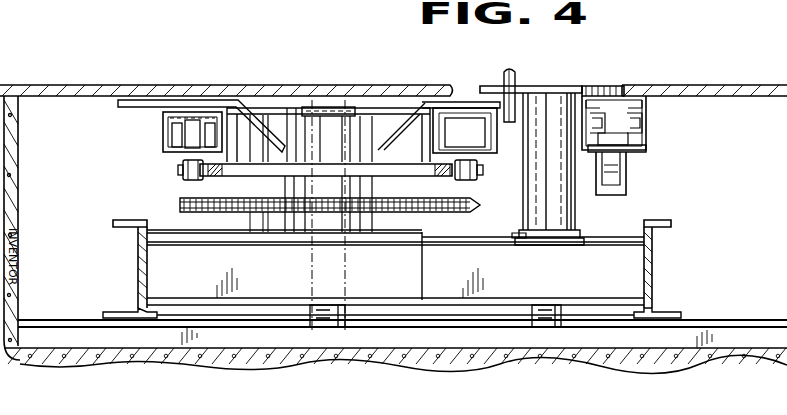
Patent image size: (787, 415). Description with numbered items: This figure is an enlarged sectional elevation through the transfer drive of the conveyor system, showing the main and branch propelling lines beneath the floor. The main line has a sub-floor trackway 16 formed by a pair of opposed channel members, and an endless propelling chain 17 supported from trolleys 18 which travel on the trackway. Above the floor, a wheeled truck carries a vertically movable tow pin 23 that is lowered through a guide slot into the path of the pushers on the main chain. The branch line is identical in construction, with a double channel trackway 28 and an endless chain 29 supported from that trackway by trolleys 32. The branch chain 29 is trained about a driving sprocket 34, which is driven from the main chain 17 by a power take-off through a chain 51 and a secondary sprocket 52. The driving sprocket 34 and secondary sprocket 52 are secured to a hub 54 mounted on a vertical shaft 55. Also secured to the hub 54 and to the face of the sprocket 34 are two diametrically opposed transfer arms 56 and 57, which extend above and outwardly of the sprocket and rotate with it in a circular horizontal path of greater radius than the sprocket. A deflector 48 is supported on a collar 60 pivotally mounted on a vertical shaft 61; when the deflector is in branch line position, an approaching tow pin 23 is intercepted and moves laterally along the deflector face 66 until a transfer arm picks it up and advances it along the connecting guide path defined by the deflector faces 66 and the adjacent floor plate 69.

The sub-floor trackway 16 is at (654, 152).
The endless propelling chain 17 is at (611, 175).
The trolleys 18 is at (643, 129).
The tow pin 23 is at (524, 84).
The double channel trackway 28 is at (164, 140).
The endless chain 29 is at (184, 177).
The trolleys 32 is at (193, 122).
The driving sprocket 34 is at (390, 172).
The deflector 48 is at (631, 130).
The chain 51 is at (181, 205).
The secondary sprocket 52 is at (275, 198).
The hub 54 is at (373, 224).
The vertical shaft 55 is at (346, 264).
The transfer arm 56 is at (220, 103).
The transfer arm 57 is at (477, 104).
The collar 60 is at (562, 217).
The vertical shaft 61 is at (562, 283).
The deflector face 66 is at (478, 98).
The floor plate 69 is at (455, 90).